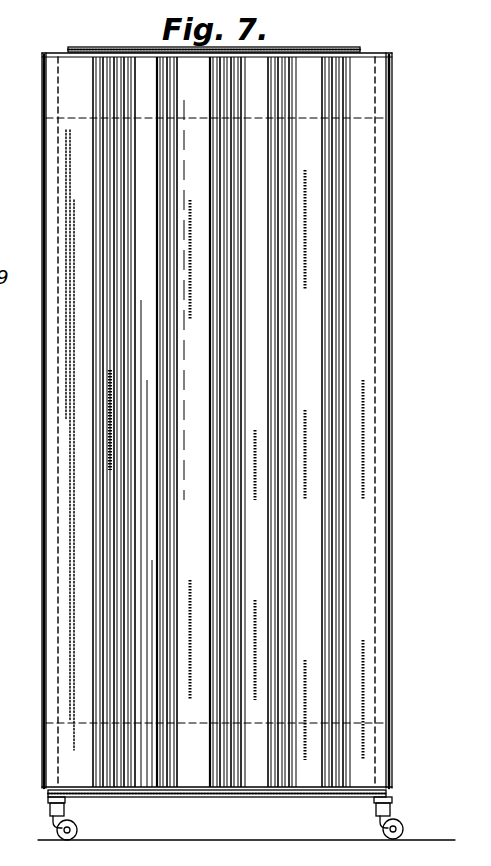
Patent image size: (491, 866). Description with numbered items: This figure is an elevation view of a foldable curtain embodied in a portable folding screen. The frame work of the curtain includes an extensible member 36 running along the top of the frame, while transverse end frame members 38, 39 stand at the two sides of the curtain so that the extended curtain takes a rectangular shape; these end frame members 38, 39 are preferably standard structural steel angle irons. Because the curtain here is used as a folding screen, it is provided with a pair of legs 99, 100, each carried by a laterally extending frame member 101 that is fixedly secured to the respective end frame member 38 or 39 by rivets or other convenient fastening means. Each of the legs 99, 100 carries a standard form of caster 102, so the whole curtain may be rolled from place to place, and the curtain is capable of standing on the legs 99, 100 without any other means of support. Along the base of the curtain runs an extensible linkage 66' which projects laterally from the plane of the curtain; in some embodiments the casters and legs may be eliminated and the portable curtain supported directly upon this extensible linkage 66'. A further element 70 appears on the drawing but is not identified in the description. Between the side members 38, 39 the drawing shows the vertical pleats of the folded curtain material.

The extensible member 36 is at (93, 50).
The end frame member 38 is at (47, 561).
The end frame member 39 is at (393, 440).
The side panel 70 is at (37, 440).
The extensible linkage 66' is at (217, 813).
The leg 99 is at (65, 803).
The leg 100 is at (393, 802).
The laterally extending frame member 101 is at (48, 800).
The caster 102 is at (57, 828).